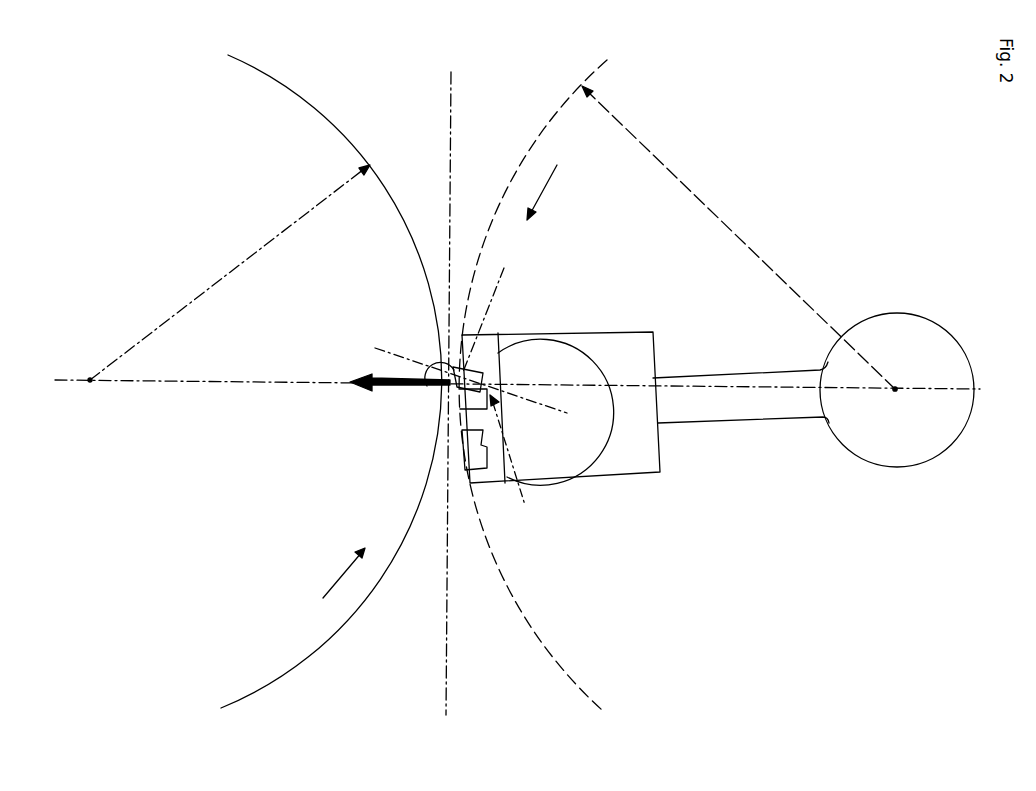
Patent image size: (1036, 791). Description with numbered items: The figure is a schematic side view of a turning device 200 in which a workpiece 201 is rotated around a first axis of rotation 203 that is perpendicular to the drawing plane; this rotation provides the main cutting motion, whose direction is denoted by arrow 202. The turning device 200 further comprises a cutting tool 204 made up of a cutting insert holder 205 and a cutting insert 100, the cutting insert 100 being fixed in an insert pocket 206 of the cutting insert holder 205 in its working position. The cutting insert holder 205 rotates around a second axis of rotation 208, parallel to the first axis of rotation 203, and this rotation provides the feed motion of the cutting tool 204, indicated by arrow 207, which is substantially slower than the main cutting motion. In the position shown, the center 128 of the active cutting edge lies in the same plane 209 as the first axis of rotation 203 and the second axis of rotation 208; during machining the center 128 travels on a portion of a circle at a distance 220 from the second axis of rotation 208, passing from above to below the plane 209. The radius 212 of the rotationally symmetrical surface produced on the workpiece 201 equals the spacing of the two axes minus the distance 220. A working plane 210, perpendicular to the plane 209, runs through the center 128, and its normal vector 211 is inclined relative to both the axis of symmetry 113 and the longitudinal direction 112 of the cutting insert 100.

The cutting insert 100 is at (475, 375).
The longitudinal direction 112 is at (497, 302).
The axis of symmetry 113 is at (390, 350).
The center of the active cutting edge 128 is at (445, 398).
The turning device 200 is at (100, 103).
The workpiece 201 is at (323, 112).
The arrow 202 is at (347, 573).
The first axis of rotation 203 is at (90, 384).
The cutting tool 204 is at (808, 281).
The cutting insert holder 205 is at (630, 333).
The insert pocket 206 is at (515, 461).
The arrow 207 is at (542, 197).
The second axis of rotation 208 is at (895, 392).
The plane 209 is at (215, 385).
The working plane 210 is at (452, 108).
The normal vector 211 is at (387, 395).
The radius 212 is at (215, 287).
The distance 220 is at (673, 176).